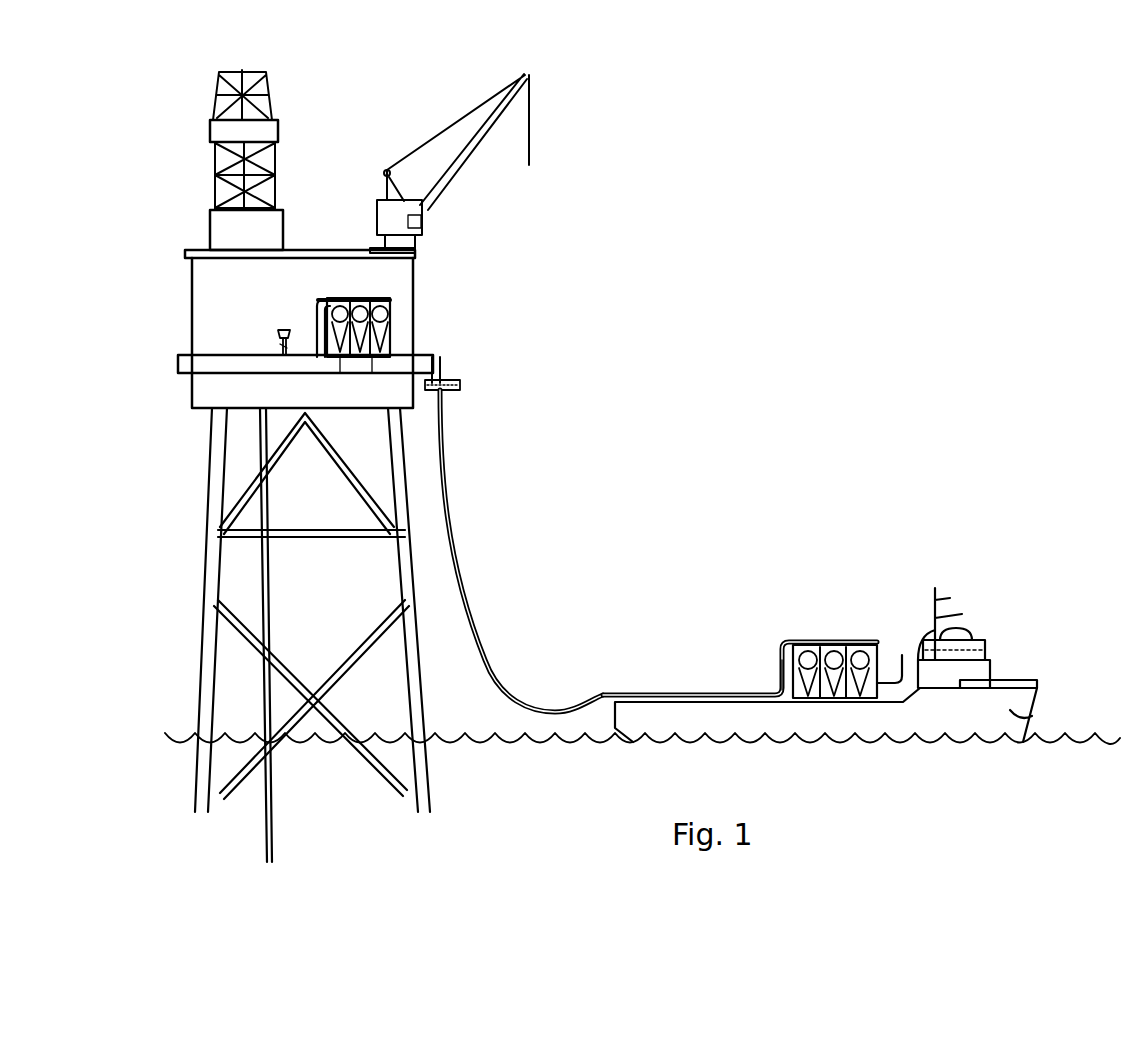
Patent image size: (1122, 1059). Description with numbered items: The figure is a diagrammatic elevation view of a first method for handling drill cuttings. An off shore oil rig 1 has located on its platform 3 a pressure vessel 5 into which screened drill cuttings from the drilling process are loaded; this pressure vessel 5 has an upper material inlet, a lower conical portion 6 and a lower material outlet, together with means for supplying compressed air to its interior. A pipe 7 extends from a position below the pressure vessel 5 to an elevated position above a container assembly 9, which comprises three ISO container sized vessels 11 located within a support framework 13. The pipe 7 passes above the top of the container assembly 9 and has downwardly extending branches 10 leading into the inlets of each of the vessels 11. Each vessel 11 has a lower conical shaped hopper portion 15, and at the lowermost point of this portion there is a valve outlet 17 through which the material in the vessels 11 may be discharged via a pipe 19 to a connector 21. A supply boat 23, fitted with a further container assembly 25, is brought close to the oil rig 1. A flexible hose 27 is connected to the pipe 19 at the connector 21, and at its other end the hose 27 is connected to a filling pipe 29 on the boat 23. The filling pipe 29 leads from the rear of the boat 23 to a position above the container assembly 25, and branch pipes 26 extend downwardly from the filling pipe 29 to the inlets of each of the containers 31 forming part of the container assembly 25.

The off shore oil rig 1 is at (205, 500).
The platform 3 is at (178, 366).
The pressure vessel 5 is at (272, 343).
The lower conical portion 6 is at (288, 330).
The pipe 7 is at (317, 330).
The container assembly 9 is at (395, 303).
The branches 10 is at (390, 300).
The vessels 11 is at (393, 320).
The support framework 13 is at (413, 268).
The lower conical shaped hopper portion 15 is at (346, 360).
The valve outlet 17 is at (370, 362).
The pipe 19 is at (441, 366).
The connector 21 is at (462, 388).
The supply boat 23 is at (1013, 717).
The container assembly 25 is at (873, 660).
The branch pipes 26 is at (795, 643).
The flexible hose 27 is at (462, 524).
The filling pipe 29 is at (685, 692).
The containers 31 is at (903, 658).